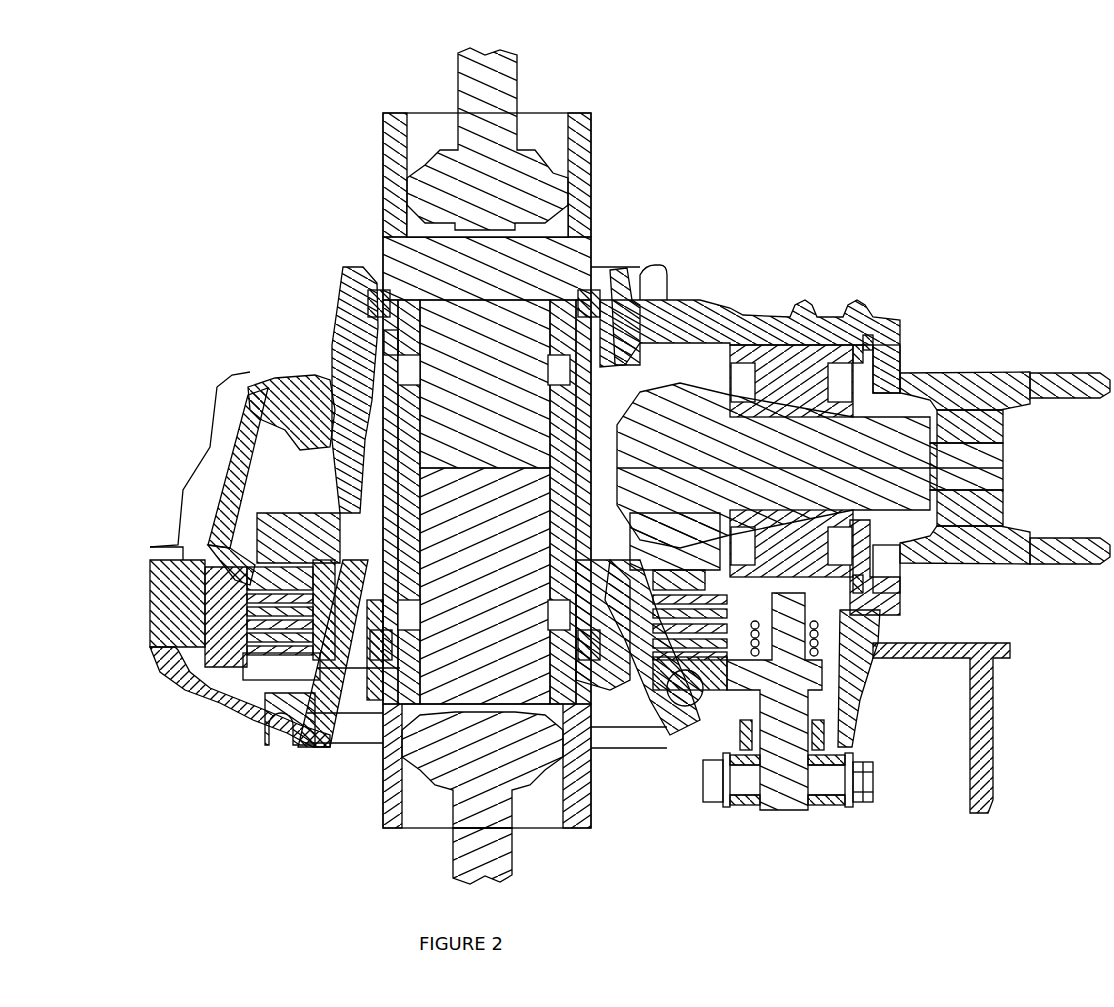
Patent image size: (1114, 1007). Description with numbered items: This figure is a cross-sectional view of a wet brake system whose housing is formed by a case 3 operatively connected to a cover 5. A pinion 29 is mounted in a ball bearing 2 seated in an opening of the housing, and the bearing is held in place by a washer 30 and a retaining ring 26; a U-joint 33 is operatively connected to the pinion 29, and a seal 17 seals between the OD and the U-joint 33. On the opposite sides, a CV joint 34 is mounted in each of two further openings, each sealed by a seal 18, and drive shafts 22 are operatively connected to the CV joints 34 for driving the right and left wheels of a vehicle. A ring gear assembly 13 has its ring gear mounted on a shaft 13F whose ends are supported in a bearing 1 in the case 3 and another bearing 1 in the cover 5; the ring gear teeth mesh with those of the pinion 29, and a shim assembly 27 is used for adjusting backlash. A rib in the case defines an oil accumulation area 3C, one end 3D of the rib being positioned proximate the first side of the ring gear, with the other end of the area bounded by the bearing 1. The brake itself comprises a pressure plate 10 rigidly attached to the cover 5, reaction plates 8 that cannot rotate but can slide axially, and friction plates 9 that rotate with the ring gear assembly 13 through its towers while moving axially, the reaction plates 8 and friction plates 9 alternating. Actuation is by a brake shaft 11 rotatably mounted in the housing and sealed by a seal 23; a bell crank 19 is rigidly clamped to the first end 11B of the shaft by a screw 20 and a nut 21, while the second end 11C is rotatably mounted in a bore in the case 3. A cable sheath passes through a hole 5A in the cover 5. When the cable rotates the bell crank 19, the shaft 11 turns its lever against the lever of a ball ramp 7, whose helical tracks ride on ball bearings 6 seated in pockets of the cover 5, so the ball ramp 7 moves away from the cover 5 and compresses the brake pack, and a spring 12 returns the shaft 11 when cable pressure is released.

The bearing 1 is at (289, 536).
The ball bearing 2 is at (846, 432).
The case 3 is at (745, 486).
The oil accumulation area 3C is at (242, 417).
The end of rib 3D is at (243, 449).
The cover 5 is at (272, 700).
The hole 5A is at (969, 741).
The ball bearings 6 is at (677, 756).
The ball ramp 7 is at (273, 709).
The reaction plates 8 is at (262, 684).
The friction plates 9 is at (235, 662).
The pressure plate 10 is at (181, 551).
The brake shaft 11 is at (774, 755).
The first end of brake shaft 11B is at (875, 840).
The second end of brake shaft 11C is at (897, 605).
The spring 12 is at (844, 668).
The ring gear assembly 13 is at (240, 450).
The shaft 13F is at (398, 352).
The seal 17 is at (932, 430).
The seal 18 is at (431, 517).
The bell crank 19 is at (770, 836).
The screw 20 is at (898, 819).
The nut 21 is at (680, 841).
The drive shafts 22 is at (466, 474).
The seal 23 is at (851, 749).
The retaining ring 26 is at (910, 414).
The shim assembly 27 is at (630, 550).
The pinion 29 is at (860, 465).
The washer 30 is at (825, 401).
The U-joint 33 is at (1005, 437).
The CV joint 34 is at (481, 497).